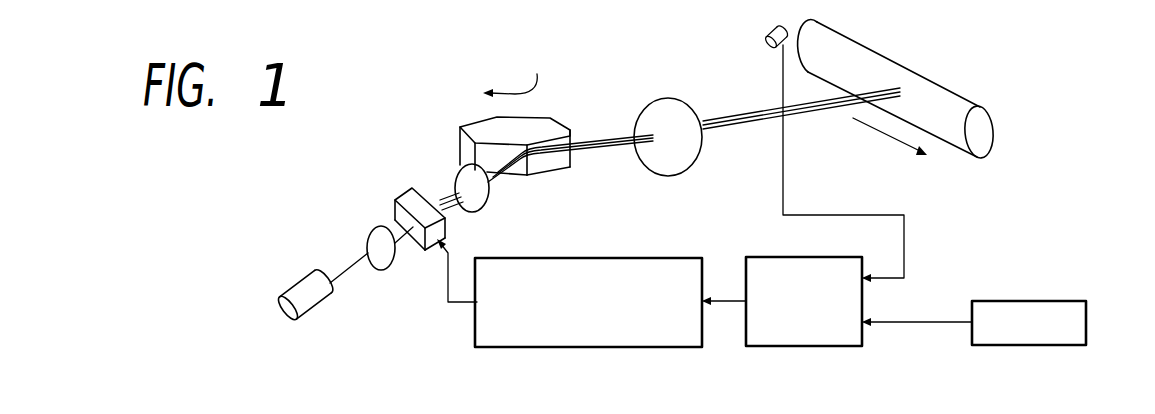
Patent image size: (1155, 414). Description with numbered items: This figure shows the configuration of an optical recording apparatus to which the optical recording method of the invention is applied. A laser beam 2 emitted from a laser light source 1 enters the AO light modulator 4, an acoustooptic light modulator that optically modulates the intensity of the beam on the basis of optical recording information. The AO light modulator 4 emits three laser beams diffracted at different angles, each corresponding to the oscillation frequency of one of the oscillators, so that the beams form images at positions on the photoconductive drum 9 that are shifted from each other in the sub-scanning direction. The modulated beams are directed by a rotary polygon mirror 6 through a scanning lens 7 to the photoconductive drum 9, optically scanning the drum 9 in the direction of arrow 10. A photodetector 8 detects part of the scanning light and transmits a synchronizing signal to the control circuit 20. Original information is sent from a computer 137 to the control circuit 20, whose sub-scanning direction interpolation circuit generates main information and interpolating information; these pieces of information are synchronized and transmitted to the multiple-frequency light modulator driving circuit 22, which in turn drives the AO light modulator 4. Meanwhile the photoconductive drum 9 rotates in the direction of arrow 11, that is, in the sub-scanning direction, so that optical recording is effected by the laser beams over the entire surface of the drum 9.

The laser light source 1 is at (302, 273).
The laser beam 2 is at (356, 264).
The AO light modulator 4 is at (408, 184).
The rotary polygon mirror 6 is at (543, 110).
The scanning lens 7 is at (685, 98).
The photodetector 8 is at (764, 34).
The photoconductive drum 9 is at (947, 77).
The arrow indicating scanning direction 10 is at (880, 133).
The arrow indicating drum rotation direction 11 is at (1007, 163).
The control circuit 20 is at (822, 250).
The multiple-frequency light modulator driving circuit 22 is at (650, 253).
The computer 137 is at (1037, 293).